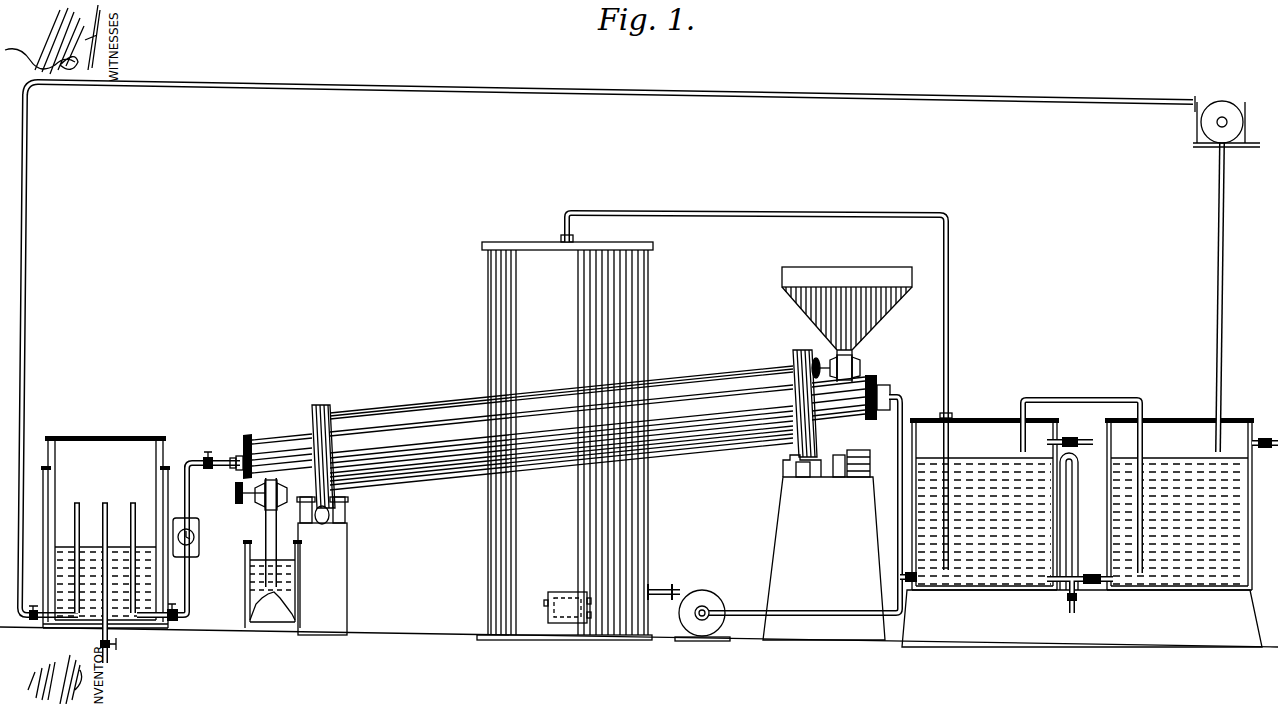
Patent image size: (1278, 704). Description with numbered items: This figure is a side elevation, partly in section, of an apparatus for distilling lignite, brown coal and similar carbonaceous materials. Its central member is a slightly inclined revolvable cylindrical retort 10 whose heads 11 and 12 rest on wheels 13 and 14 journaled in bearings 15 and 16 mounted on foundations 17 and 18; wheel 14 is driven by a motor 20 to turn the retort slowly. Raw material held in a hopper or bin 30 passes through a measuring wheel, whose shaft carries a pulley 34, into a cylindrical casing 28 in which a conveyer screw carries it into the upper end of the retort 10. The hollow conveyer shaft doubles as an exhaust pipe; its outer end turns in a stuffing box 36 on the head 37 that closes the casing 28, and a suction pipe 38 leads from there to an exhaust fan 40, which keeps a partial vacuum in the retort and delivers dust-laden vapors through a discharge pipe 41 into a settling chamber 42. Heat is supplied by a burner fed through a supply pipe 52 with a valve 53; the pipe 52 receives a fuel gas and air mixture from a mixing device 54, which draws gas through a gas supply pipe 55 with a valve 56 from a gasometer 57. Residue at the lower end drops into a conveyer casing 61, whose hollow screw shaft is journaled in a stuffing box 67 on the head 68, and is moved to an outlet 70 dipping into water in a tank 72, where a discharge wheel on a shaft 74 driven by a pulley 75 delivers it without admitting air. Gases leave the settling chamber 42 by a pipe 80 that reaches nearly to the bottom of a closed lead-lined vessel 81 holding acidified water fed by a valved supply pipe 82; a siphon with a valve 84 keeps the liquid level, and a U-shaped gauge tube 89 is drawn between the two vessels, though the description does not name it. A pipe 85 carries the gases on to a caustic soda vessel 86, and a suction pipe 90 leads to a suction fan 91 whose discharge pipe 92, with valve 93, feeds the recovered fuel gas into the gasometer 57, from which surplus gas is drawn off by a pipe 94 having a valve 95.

The revolvable cylindrical retort 10 is at (447, 401).
The head 11 is at (318, 403).
The upper retort head 12 is at (796, 361).
The wheel 13 is at (325, 514).
The wheel 14 is at (805, 478).
The bearing 15 is at (345, 516).
The bearing 16 is at (783, 468).
The foundation 17 is at (347, 582).
The foundation 18 is at (824, 558).
The motor 20 is at (868, 455).
The cylindrical casing 28 is at (838, 452).
The hopper or bin 30 is at (895, 332).
The pulley 34 is at (812, 359).
The stuffing box 36 is at (893, 393).
The head 37 is at (880, 378).
The suction pipe 38 is at (897, 470).
The exhaust fan 40 is at (716, 603).
The discharge pipe 41 is at (661, 590).
The settling chamber 42 is at (648, 332).
The supply pipe 52 is at (220, 460).
The valve 53 is at (204, 458).
The mixing device 54 is at (200, 540).
The gas supply pipe 55 is at (190, 602).
The valve 56 is at (172, 622).
The gasometer 57 is at (105, 519).
The conveyer casing 61 is at (275, 441).
The stuffing box 67 is at (238, 467).
The head 68 is at (248, 433).
The outlet 70 is at (262, 529).
The tank 72 is at (245, 570).
The shaft 74 is at (257, 500).
The pulley 75 is at (234, 491).
The pipe 80 is at (816, 213).
The closed lead-lined vessel 81 is at (975, 425).
The valved supply pipe 82 is at (890, 577).
The valve 84 is at (1076, 598).
The pipe 85 is at (1088, 400).
The closed vessel 86 is at (1163, 437).
The gauge tube 89 is at (1079, 505).
The suction pipe 90 is at (1224, 268).
The suction fan 91 is at (1212, 122).
The discharge pipe 92 is at (771, 99).
The valve 93 is at (20, 619).
The pipe 94 is at (106, 503).
The valve 95 is at (113, 645).